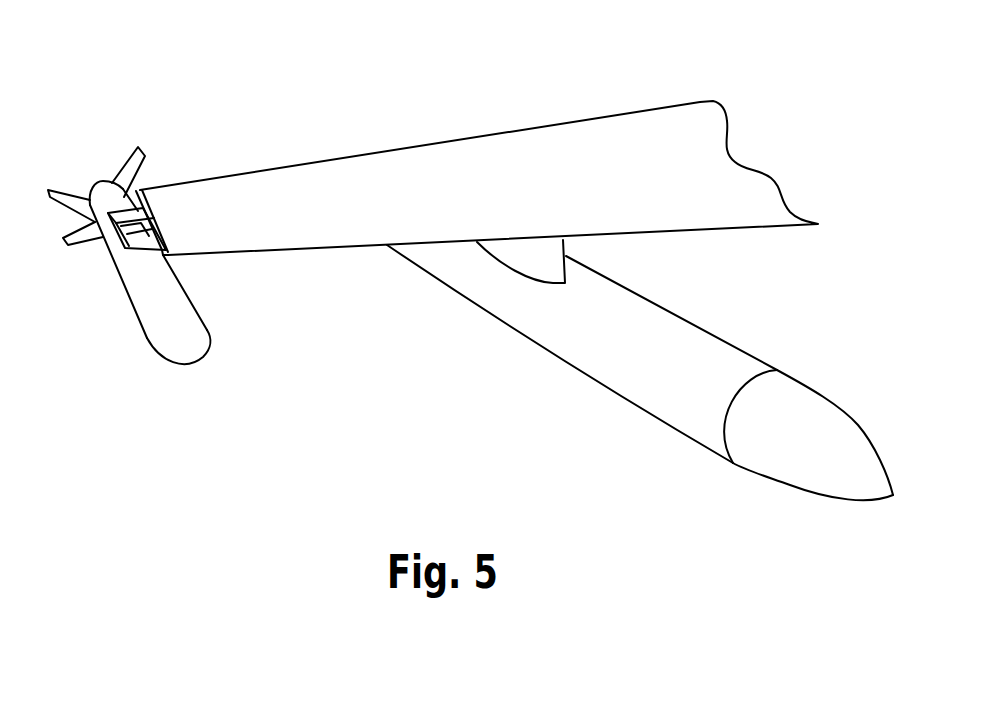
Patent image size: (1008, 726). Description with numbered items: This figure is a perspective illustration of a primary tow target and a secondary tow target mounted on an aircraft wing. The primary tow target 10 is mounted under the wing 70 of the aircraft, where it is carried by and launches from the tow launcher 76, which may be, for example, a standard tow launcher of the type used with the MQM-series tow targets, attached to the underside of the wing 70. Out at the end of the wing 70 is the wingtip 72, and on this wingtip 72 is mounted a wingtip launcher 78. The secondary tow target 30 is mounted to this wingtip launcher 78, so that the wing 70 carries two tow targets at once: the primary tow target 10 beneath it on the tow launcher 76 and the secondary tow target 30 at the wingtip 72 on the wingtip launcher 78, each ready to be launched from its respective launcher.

The primary tow target 10 is at (703, 367).
The secondary tow target 30 is at (177, 317).
The wing 70 is at (584, 149).
The wingtip 72 is at (198, 198).
The tow launcher 76 is at (538, 248).
The wingtip launcher 78 is at (120, 213).